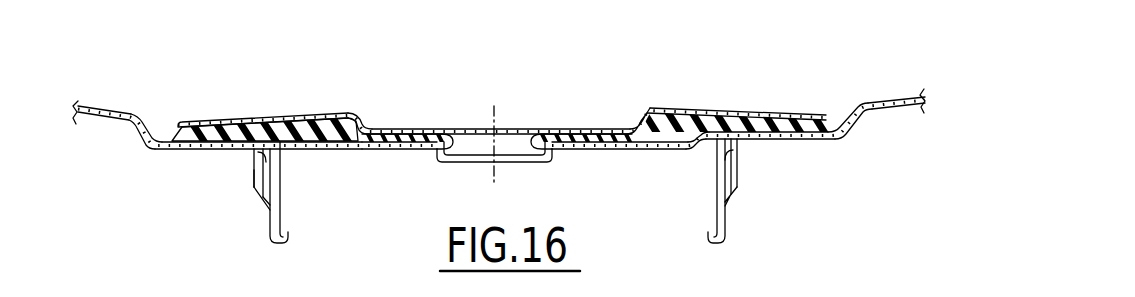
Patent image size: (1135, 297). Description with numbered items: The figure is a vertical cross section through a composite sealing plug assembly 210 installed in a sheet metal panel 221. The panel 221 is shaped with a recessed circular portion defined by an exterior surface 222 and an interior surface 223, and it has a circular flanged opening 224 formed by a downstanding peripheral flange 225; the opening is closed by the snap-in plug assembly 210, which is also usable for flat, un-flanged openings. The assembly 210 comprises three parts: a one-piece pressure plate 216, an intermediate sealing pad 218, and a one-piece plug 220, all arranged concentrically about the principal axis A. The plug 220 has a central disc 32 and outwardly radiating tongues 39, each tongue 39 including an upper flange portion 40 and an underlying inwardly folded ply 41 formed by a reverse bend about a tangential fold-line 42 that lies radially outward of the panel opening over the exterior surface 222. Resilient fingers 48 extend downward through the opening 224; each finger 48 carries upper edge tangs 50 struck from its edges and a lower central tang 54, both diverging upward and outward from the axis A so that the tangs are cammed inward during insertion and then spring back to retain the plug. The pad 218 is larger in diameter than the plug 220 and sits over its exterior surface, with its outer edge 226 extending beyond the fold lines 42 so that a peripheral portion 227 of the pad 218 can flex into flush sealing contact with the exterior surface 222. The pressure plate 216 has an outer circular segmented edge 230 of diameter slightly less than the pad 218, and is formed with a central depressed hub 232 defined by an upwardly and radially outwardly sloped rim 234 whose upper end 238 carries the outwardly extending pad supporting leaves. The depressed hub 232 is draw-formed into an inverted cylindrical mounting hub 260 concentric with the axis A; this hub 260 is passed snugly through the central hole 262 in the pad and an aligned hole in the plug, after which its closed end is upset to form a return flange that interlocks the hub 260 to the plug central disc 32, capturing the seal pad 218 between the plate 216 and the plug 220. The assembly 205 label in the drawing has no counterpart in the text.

The pad outer edge 226 is at (172, 135).
The intermediate sealing pad 218 is at (176, 127).
The peripheral portion of the pad 227 is at (188, 130).
The plug central disc 32 is at (378, 150).
The flange portion 40 is at (277, 128).
The fold-line 42 is at (238, 132).
The inwardly folded ply 41 is at (262, 135).
The panel assembly 205 is at (345, 88).
The sloped rim 234 is at (353, 120).
The mounting hub 260 is at (465, 130).
The principal axis A is at (495, 113).
The central hole in the pad 262 is at (522, 137).
The central depressed hub 232 is at (559, 128).
The upper end of the rim 238 is at (633, 118).
The composite sealing plug assembly 210 is at (652, 55).
The one-piece plug 220 is at (641, 157).
The pressure plate 216 is at (663, 100).
The tongue 39 is at (710, 120).
The interior surface 223 is at (803, 140).
The outer circular segmented edge 230 is at (822, 120).
The exterior surface 222 is at (830, 132).
The sheet metal panel 221 is at (883, 100).
The finger 48 is at (283, 188).
The edge tang 50 is at (273, 162).
The lower central tang 54 is at (267, 193).
The downstanding peripheral flange 225 is at (253, 163).
The flanged opening 224 is at (260, 183).